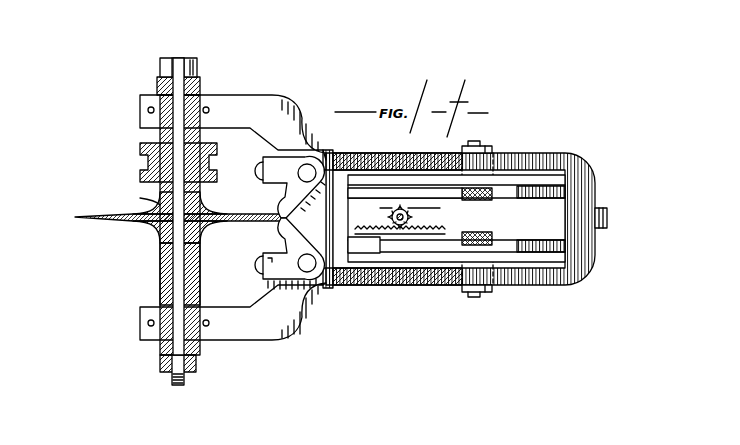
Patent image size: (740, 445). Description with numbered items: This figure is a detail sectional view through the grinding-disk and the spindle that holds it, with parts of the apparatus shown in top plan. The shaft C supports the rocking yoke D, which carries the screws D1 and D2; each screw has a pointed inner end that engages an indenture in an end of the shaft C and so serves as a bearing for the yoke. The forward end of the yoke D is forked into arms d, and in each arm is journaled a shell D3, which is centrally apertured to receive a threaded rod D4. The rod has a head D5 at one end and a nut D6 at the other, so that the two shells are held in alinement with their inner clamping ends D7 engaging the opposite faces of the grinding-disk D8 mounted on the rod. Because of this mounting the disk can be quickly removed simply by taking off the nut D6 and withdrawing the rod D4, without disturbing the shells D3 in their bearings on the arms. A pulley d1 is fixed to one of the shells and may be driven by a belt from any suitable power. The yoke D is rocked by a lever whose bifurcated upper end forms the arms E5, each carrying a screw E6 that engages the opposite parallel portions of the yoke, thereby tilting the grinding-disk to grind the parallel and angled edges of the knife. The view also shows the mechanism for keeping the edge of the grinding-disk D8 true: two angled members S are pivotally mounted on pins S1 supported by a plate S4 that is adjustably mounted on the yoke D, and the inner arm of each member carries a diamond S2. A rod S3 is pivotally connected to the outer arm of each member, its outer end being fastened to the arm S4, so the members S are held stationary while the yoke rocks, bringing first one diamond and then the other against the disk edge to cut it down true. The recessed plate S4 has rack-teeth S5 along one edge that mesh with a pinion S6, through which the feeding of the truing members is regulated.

The rocking yoke D is at (543, 158).
The screw D1 is at (603, 216).
The screw D2 is at (148, 202).
The shell D3 is at (158, 136).
The threaded rod D4 is at (178, 285).
The head D5 is at (184, 57).
The nut D6 is at (163, 377).
The inner clamping end D7 is at (150, 228).
The grinding-disk D8 is at (89, 219).
The arm d is at (233, 217).
The pulley d1 is at (139, 162).
The angled member S is at (293, 170).
The pin S1 is at (326, 283).
The diamond S2 is at (250, 238).
The rod S3 is at (277, 263).
The plate S4 is at (323, 228).
The rack-teeth S5 is at (400, 242).
The pinion S6 is at (412, 210).
The shaft C is at (543, 217).
The arm E5 is at (494, 151).
The screw E6 is at (487, 148).